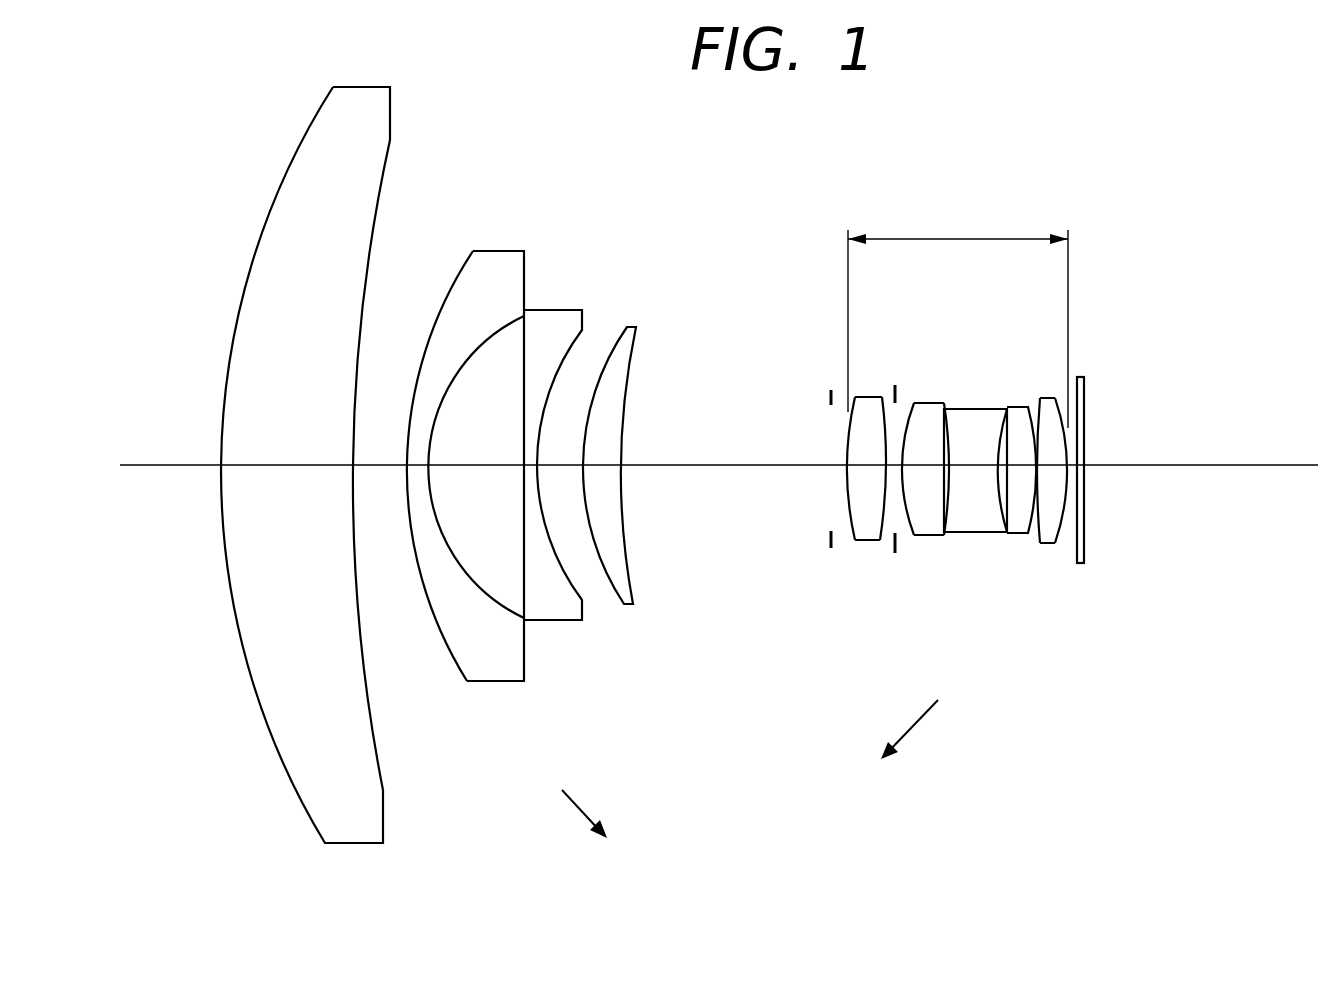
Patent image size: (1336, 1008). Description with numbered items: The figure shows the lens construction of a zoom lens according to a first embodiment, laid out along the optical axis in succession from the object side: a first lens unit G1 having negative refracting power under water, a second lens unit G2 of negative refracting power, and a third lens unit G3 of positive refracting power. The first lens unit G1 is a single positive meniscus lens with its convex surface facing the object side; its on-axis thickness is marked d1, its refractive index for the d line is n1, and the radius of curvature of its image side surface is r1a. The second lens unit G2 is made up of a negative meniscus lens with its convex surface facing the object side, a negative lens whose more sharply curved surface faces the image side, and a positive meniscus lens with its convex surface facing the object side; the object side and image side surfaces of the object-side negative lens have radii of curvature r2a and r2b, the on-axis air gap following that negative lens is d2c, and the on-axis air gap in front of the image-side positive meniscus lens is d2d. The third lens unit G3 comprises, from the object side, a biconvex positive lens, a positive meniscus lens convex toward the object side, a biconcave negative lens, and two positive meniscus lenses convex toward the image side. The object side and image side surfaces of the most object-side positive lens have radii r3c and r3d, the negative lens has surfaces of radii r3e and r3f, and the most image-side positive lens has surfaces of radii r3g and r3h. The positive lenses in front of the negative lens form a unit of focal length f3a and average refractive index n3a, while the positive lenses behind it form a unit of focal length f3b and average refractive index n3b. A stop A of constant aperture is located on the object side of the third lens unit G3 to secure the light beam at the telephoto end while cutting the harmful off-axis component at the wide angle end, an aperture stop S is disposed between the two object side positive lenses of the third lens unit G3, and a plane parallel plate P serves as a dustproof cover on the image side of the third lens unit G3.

The first lens unit G1 is at (397, 858).
The second lens unit G2 is at (647, 686).
The third lens unit G3 is at (1063, 594).
The refractive index of the object-side lens of the first lens unit n1 is at (337, 465).
The radius of curvature of the image side surface of the object-side lens of the fir r1a is at (384, 184).
The radius of curvature of the object side surface of the object-side negative lens r2a is at (441, 312).
The radius of curvature of the image side surface of the object-side negative lens o r2b is at (477, 352).
The on-axis thickness of the object-side lens of the first lens unit d1 is at (353, 465).
The on-axis air gap in the second lens unit d2c is at (523, 465).
The on-axis air gap before the positive meniscus lens of the second lens unit d2d is at (583, 465).
The focal length of the object-side positive lens unit of the third lens unit f3a is at (943, 380).
The focal length of the image-side positive lens unit of the third lens unit f3b is at (1063, 392).
The stop A is at (827, 545).
The aperture stop S is at (893, 545).
The average refractive index of the object-side positive lenses of the third lens un n3a is at (877, 503).
The average refractive index of the image-side positive lenses of the third lens uni n3b is at (1016, 528).
The radius of curvature of the object side surface of the object-side positive lens r3c is at (848, 430).
The radius of curvature of the image side surface of the object-side positive lens o r3d is at (884, 432).
The radius of curvature of the object side surface of the negative lens of the third r3e is at (949, 421).
The radius of curvature of the image side surface of the negative lens of the third r3f is at (1000, 470).
The radius of curvature of the object side surface of the image-side positive lens o r3g is at (1042, 508).
The radius of curvature of the image side surface of the image-side positive lens of r3h is at (1062, 527).
The plane parallel plate P is at (1085, 385).